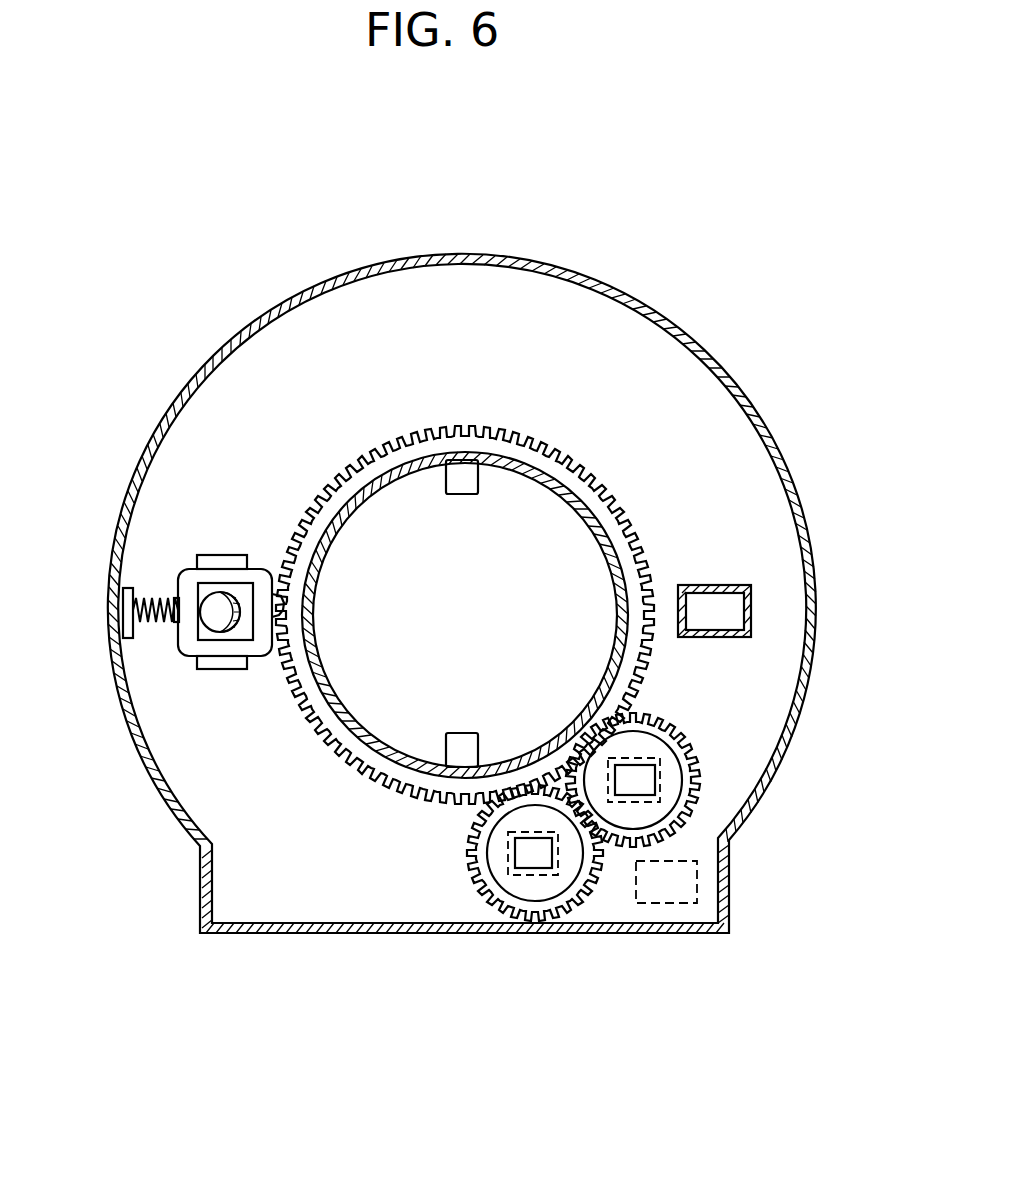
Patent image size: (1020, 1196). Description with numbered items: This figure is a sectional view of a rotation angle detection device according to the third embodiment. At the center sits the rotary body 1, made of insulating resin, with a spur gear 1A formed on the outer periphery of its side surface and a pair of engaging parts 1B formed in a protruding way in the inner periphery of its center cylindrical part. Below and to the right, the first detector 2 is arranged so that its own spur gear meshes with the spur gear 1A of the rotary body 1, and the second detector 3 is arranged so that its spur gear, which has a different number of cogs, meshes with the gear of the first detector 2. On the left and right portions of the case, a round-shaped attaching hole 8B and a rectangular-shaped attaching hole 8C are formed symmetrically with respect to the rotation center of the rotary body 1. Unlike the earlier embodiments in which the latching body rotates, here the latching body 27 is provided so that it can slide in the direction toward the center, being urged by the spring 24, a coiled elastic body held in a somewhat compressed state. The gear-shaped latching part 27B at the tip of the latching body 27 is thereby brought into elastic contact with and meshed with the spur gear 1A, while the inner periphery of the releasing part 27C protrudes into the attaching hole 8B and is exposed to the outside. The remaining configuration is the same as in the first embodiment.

The rotary body 1 is at (520, 508).
The spur gear 1A is at (587, 477).
The engaging parts 1B is at (460, 467).
The first detector 2 is at (698, 808).
The second detector 3 is at (582, 905).
The attaching hole 8B is at (212, 617).
The attaching hole 8C is at (717, 606).
The spring 24 is at (178, 600).
The latching body 27 is at (178, 563).
The latching part 27B is at (263, 603).
The releasing part 27C is at (182, 606).